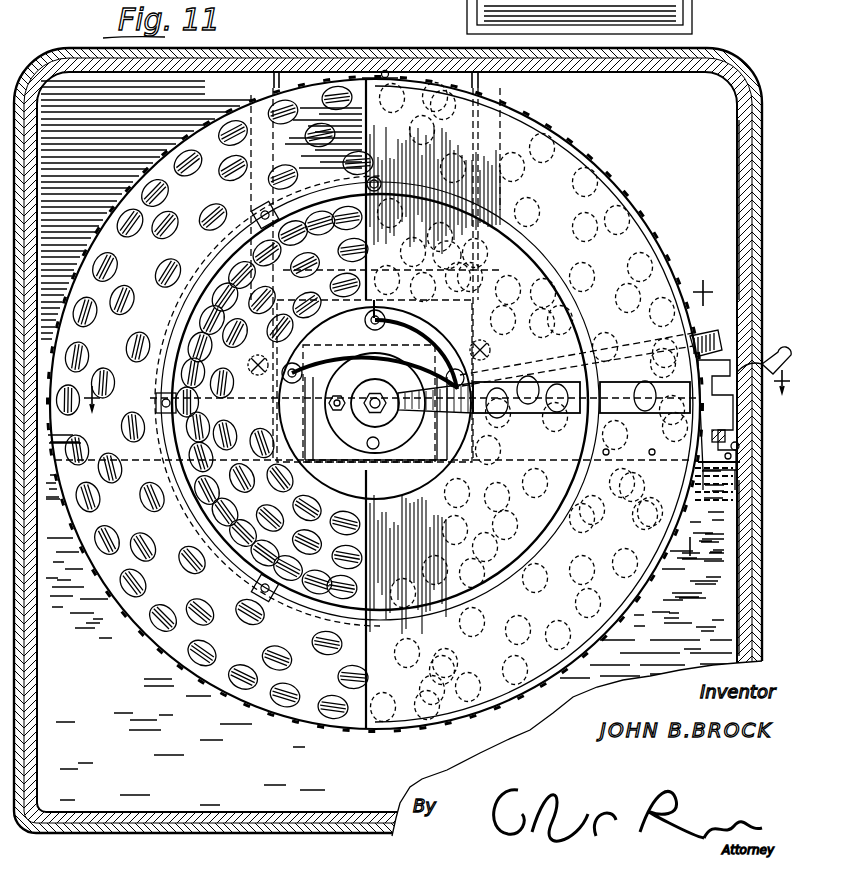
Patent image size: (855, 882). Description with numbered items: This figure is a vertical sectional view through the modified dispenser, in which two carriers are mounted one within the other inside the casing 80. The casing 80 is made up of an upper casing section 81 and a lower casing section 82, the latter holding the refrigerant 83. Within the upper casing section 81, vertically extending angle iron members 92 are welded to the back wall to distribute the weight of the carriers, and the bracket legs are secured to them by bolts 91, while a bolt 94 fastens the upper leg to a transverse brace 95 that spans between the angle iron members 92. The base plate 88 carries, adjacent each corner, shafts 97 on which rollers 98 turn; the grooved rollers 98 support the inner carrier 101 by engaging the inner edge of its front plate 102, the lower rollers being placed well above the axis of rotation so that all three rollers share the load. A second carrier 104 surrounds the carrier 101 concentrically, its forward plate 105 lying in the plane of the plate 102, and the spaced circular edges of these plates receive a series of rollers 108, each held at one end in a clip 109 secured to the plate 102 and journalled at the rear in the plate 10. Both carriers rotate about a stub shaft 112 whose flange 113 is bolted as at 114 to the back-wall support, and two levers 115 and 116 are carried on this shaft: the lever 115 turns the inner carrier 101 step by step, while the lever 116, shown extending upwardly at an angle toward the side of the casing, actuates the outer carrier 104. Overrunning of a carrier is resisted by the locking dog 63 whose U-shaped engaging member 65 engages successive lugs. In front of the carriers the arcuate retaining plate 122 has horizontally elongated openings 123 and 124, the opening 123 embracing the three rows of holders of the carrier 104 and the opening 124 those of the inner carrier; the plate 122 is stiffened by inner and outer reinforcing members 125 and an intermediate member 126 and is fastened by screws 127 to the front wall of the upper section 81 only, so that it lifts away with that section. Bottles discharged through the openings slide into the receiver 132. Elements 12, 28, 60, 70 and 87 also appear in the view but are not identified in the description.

The plate 10 is at (437, 398).
The section line 12- 12 is at (697, 419).
The perforations 28 is at (190, 170).
The latch 60 is at (764, 354).
The locking dog 63 is at (755, 448).
The U-shaped engaging member 65 is at (752, 473).
The bracket 70 is at (740, 427).
The casing 80 is at (718, 47).
The upper casing section 81 is at (757, 196).
The lower casing section 82 is at (748, 580).
The refrigerant 83 is at (717, 508).
The stud 87 is at (366, 322).
The base plate 88 is at (352, 352).
The bolts 91 is at (250, 360).
The angle iron members 92 is at (250, 87).
The bolt 94 is at (404, 258).
The transverse brace 95 is at (447, 255).
The shafts 97 is at (374, 330).
The rollers 98 is at (447, 372).
The inner carrier 101 is at (310, 486).
The front plate 102 is at (377, 455).
The second carrier 104 is at (222, 705).
The forward plate 105 is at (188, 670).
The rollers 108 is at (248, 224).
The clip 109 is at (272, 206).
The stub shaft 112 is at (368, 414).
The flange 113 is at (338, 432).
The bolts 114 is at (380, 450).
The lever 115 is at (523, 458).
The lever 116 is at (643, 340).
The arcuate plate 122 is at (600, 192).
The opening 123 is at (604, 413).
The opening 124 is at (484, 452).
The reinforcing members 125 is at (364, 532).
The reinforcing member 126 is at (380, 630).
The screws 127 is at (387, 66).
The receiver 132 is at (562, 17).